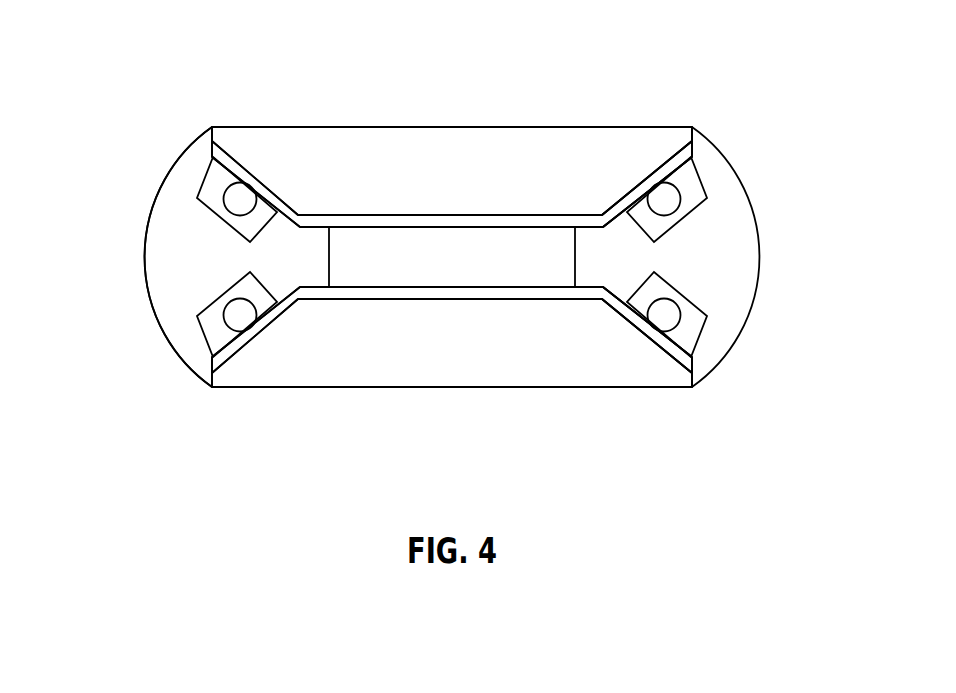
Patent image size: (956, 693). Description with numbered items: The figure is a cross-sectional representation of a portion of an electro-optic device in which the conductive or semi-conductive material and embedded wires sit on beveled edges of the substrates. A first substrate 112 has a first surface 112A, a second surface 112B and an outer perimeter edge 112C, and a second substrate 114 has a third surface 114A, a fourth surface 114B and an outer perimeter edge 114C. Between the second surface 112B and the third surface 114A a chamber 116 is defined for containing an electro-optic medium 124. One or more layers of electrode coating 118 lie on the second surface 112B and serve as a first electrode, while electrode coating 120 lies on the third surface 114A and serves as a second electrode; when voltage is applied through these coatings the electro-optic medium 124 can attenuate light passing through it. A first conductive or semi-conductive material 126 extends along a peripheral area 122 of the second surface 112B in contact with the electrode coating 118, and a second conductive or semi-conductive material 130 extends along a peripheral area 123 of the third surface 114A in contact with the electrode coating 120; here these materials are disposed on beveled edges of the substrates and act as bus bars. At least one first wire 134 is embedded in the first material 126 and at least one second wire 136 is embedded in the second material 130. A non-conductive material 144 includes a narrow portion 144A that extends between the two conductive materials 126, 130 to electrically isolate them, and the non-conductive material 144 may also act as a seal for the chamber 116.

The first substrate 112 is at (298, 143).
The first surface 112A is at (330, 127).
The second surface 112B is at (388, 215).
The outer perimeter edge 112C is at (694, 132).
The second substrate 114 is at (328, 368).
The third surface 114A is at (363, 300).
The fourth surface 114B is at (405, 387).
The outer perimeter edge 114C is at (694, 382).
The chamber 116 is at (427, 250).
The electrode coating 118 is at (533, 222).
The electrode coating 120 is at (515, 292).
The peripheral area 122 is at (578, 215).
The peripheral area 123 is at (573, 298).
The electro-optic medium 124 is at (478, 248).
The first conductive or semi-conductive material 126 is at (225, 182).
The second conductive or semi-conductive material 130 is at (221, 331).
The first wire 134 is at (240, 199).
The second wire 136 is at (240, 314).
The non-conductive material 144 is at (278, 238).
The narrow portion 144A is at (173, 243).